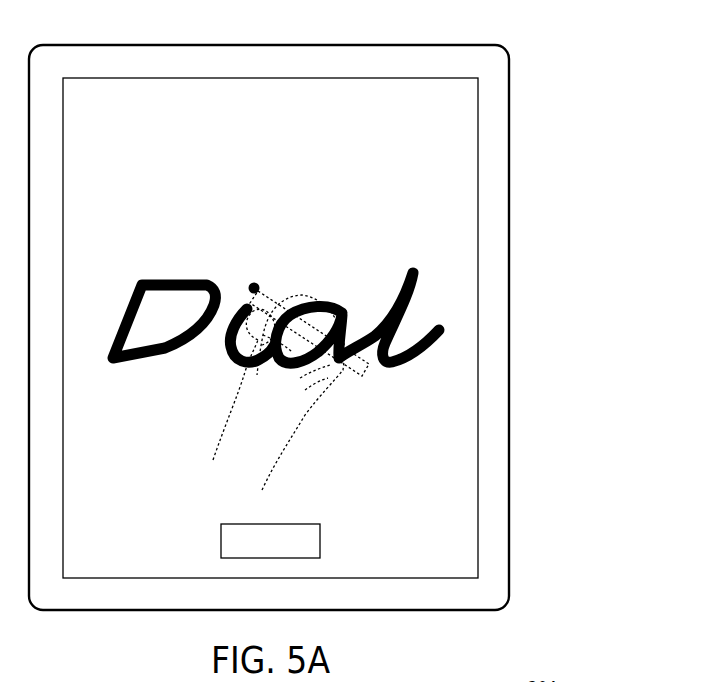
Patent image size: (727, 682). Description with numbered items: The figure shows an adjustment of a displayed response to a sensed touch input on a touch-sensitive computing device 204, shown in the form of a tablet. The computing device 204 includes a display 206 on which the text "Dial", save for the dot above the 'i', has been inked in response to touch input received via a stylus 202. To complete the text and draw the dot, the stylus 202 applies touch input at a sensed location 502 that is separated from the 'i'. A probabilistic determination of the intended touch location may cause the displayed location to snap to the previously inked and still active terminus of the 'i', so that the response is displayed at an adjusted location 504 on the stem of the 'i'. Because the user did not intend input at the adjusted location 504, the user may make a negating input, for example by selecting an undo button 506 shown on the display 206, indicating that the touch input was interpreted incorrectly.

The touch-sensitive computing device 204 is at (512, 62).
The display 206 is at (452, 194).
The stylus 202 is at (376, 370).
The sensed location 502 is at (258, 285).
The adjusted location 504 is at (243, 305).
The undo button 506 is at (322, 524).